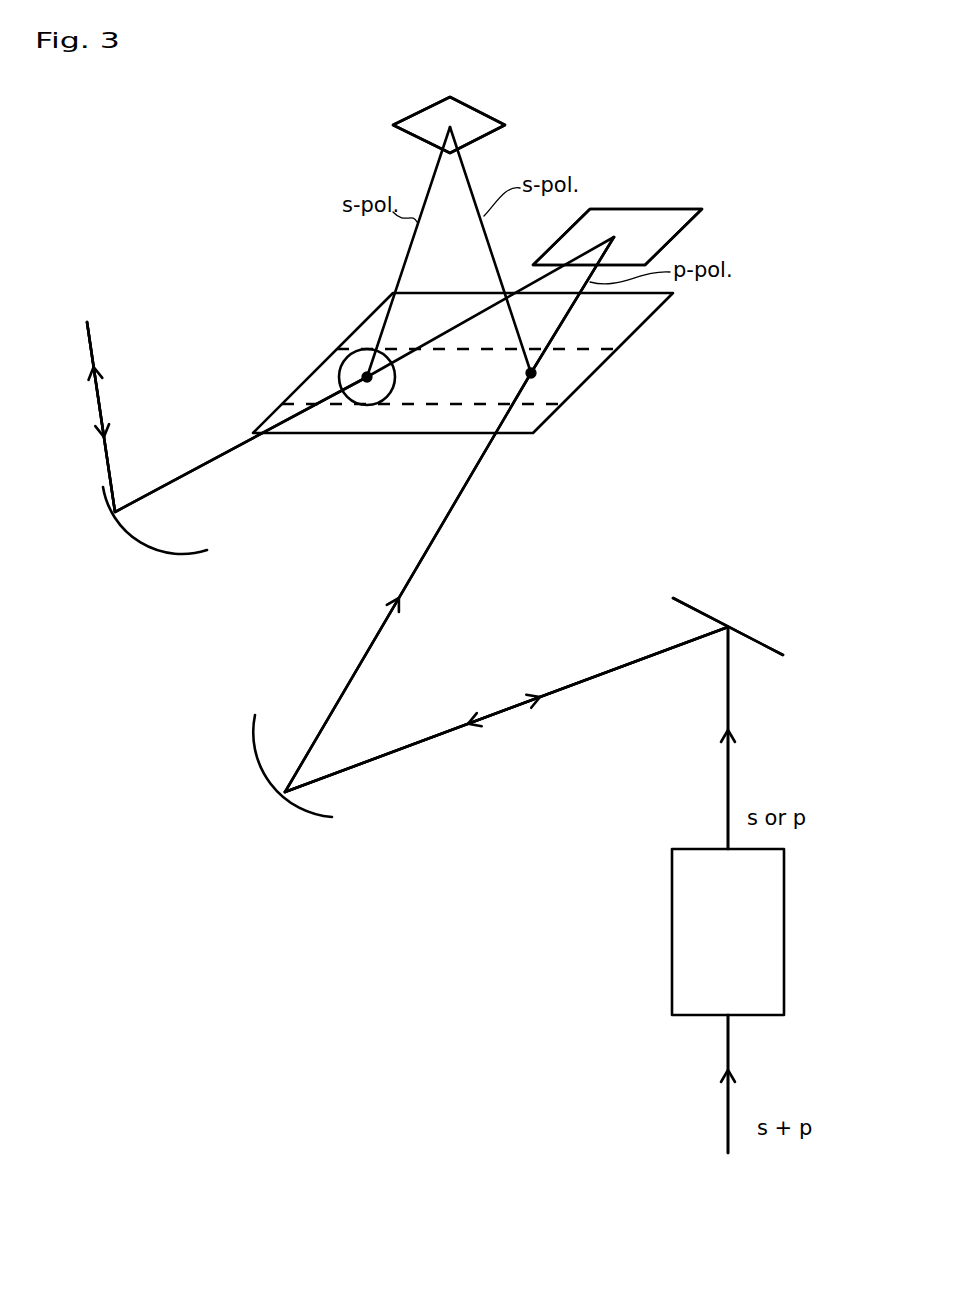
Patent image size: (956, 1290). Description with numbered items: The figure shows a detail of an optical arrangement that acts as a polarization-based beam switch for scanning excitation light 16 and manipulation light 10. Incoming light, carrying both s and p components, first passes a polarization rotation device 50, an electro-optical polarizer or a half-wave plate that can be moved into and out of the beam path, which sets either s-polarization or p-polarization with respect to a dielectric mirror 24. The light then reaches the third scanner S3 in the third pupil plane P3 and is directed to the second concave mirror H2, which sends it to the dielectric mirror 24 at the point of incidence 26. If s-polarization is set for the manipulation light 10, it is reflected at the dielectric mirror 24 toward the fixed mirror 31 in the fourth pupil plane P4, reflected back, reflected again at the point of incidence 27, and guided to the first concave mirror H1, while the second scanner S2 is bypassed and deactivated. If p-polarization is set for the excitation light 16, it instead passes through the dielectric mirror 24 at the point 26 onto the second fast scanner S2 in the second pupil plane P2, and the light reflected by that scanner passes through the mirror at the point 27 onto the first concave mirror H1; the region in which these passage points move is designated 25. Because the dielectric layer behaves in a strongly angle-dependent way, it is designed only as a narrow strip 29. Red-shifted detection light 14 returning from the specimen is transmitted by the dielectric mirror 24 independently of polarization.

The manipulation light 10 is at (100, 368).
The excitation light 16 is at (470, 695).
The detection light 14 is at (97, 440).
The dielectric mirror 24 is at (620, 328).
The region of passage points 25 is at (345, 380).
The point of incidence 26 is at (540, 376).
The point of incidence 27 is at (345, 374).
The narrow strip 29 is at (420, 388).
The fixed mirror 31 is at (460, 112).
The polarization rotation device 50 is at (741, 952).
The first concave mirror H1 is at (145, 545).
The second concave mirror H2 is at (258, 768).
The second scanner S2 is at (653, 218).
The third scanner S3 is at (747, 630).
The second pupil plane P2 is at (617, 204).
The third pupil plane P3 is at (730, 608).
The fourth pupil plane P4 is at (449, 98).